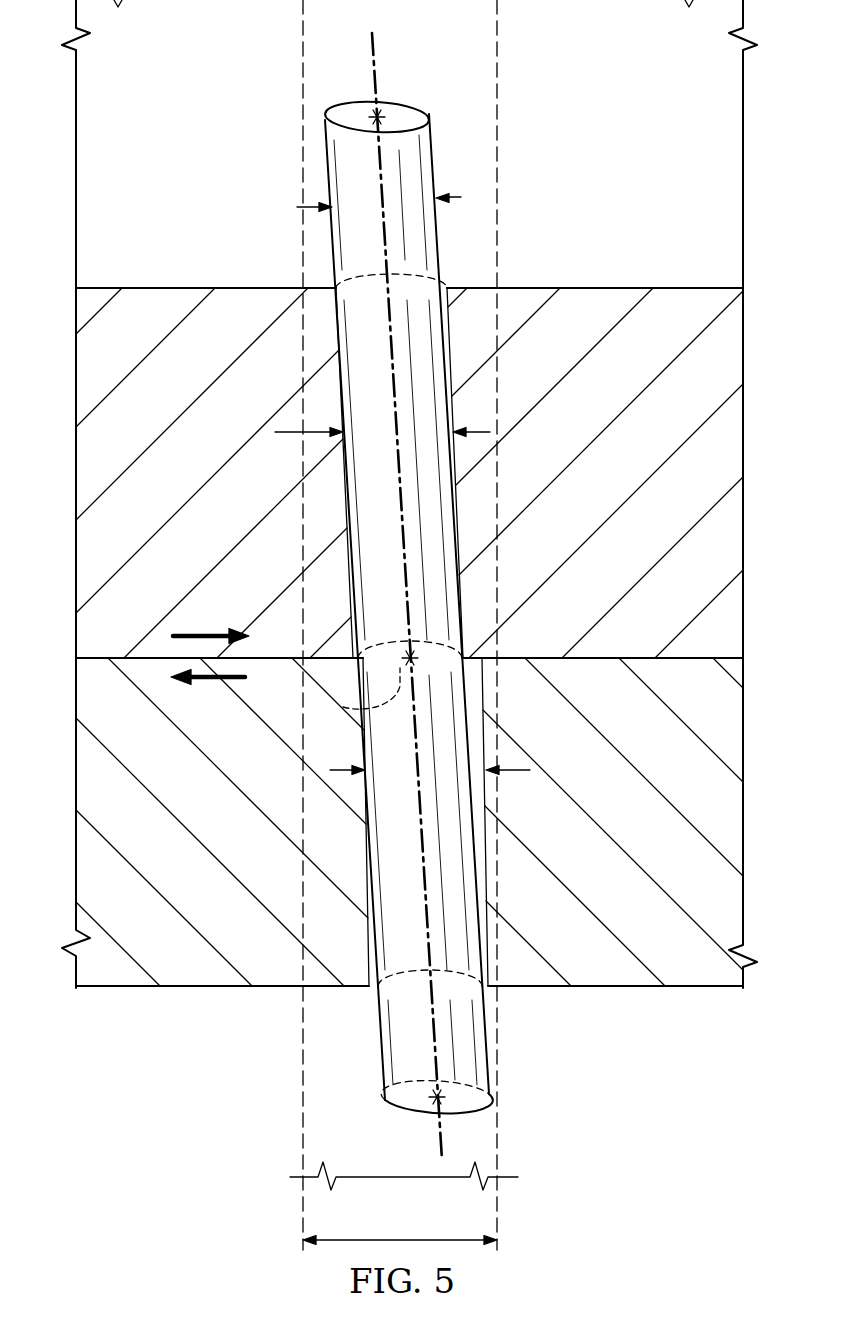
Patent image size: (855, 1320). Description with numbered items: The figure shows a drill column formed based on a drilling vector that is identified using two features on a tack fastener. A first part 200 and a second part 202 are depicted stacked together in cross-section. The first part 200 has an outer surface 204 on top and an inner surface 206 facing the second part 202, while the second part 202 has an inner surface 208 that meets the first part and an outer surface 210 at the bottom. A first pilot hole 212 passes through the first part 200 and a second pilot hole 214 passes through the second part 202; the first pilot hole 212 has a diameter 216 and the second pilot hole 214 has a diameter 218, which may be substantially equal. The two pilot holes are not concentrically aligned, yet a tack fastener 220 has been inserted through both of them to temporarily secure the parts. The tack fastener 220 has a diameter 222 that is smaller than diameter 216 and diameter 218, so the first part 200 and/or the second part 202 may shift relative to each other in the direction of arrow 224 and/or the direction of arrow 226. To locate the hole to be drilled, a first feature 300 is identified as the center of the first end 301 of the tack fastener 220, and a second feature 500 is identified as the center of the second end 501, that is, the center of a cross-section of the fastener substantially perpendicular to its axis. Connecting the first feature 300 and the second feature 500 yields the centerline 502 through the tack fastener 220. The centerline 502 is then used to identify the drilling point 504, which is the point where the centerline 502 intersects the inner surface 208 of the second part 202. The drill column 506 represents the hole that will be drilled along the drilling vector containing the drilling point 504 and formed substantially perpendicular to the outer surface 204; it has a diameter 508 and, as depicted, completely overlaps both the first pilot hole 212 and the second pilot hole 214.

The first part 200 is at (590, 491).
The second part 202 is at (590, 793).
The outer surface 204 is at (646, 290).
The inner surface 206 is at (606, 659).
The inner surface 208 is at (551, 656).
The outer surface 210 is at (658, 980).
The first pilot hole 212 is at (338, 513).
The second pilot hole 214 is at (358, 855).
The diameter 216 is at (272, 432).
The diameter 218 is at (529, 770).
The tack fastener 220 is at (383, 1038).
The diameter 222 is at (452, 197).
The arrow 224 is at (198, 632).
The arrow 226 is at (218, 686).
The first feature 300 is at (382, 113).
The first end 301 is at (356, 82).
The second feature 500 is at (393, 1104).
The second end 501 is at (470, 1121).
The centerline 502 is at (376, 60).
The drilling point 504 is at (356, 703).
The drill column 506 is at (498, 82).
The diameter 508 is at (400, 1240).